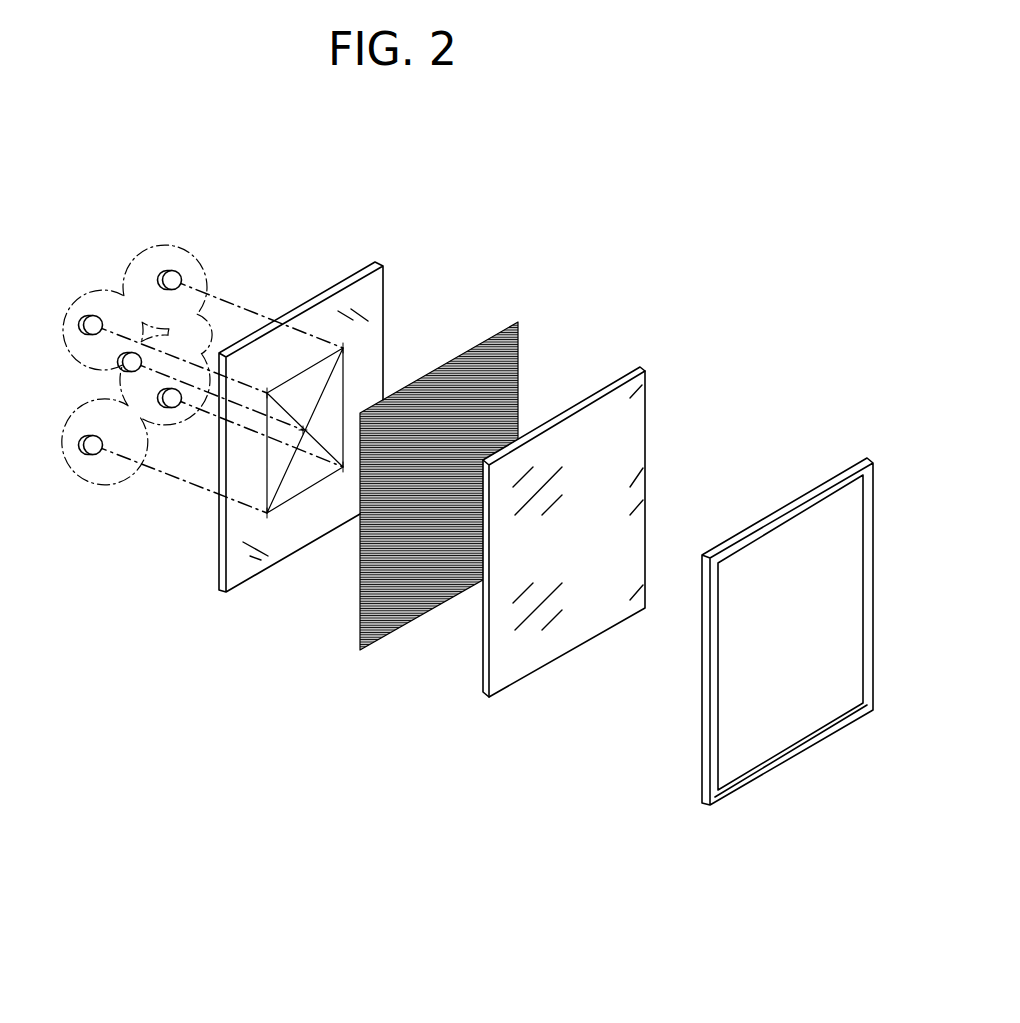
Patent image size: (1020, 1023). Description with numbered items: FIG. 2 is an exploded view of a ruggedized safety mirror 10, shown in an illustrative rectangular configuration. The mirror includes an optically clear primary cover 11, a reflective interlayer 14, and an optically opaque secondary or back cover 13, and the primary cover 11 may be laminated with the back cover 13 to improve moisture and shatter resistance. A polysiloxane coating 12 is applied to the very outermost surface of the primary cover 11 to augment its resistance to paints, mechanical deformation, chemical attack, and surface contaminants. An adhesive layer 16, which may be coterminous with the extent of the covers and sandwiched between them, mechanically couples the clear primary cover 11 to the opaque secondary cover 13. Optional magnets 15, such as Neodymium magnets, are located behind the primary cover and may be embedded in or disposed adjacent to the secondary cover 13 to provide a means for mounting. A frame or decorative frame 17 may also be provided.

The display device 10 is at (623, 258).
The primary cover 11 is at (480, 703).
The polysiloxane coating 12 is at (632, 459).
The secondary cover 13 is at (220, 595).
The reflective interlayer 14 is at (370, 312).
The magnets 15 is at (187, 273).
The adhesive layer 16 is at (532, 372).
The frame 17 is at (702, 808).